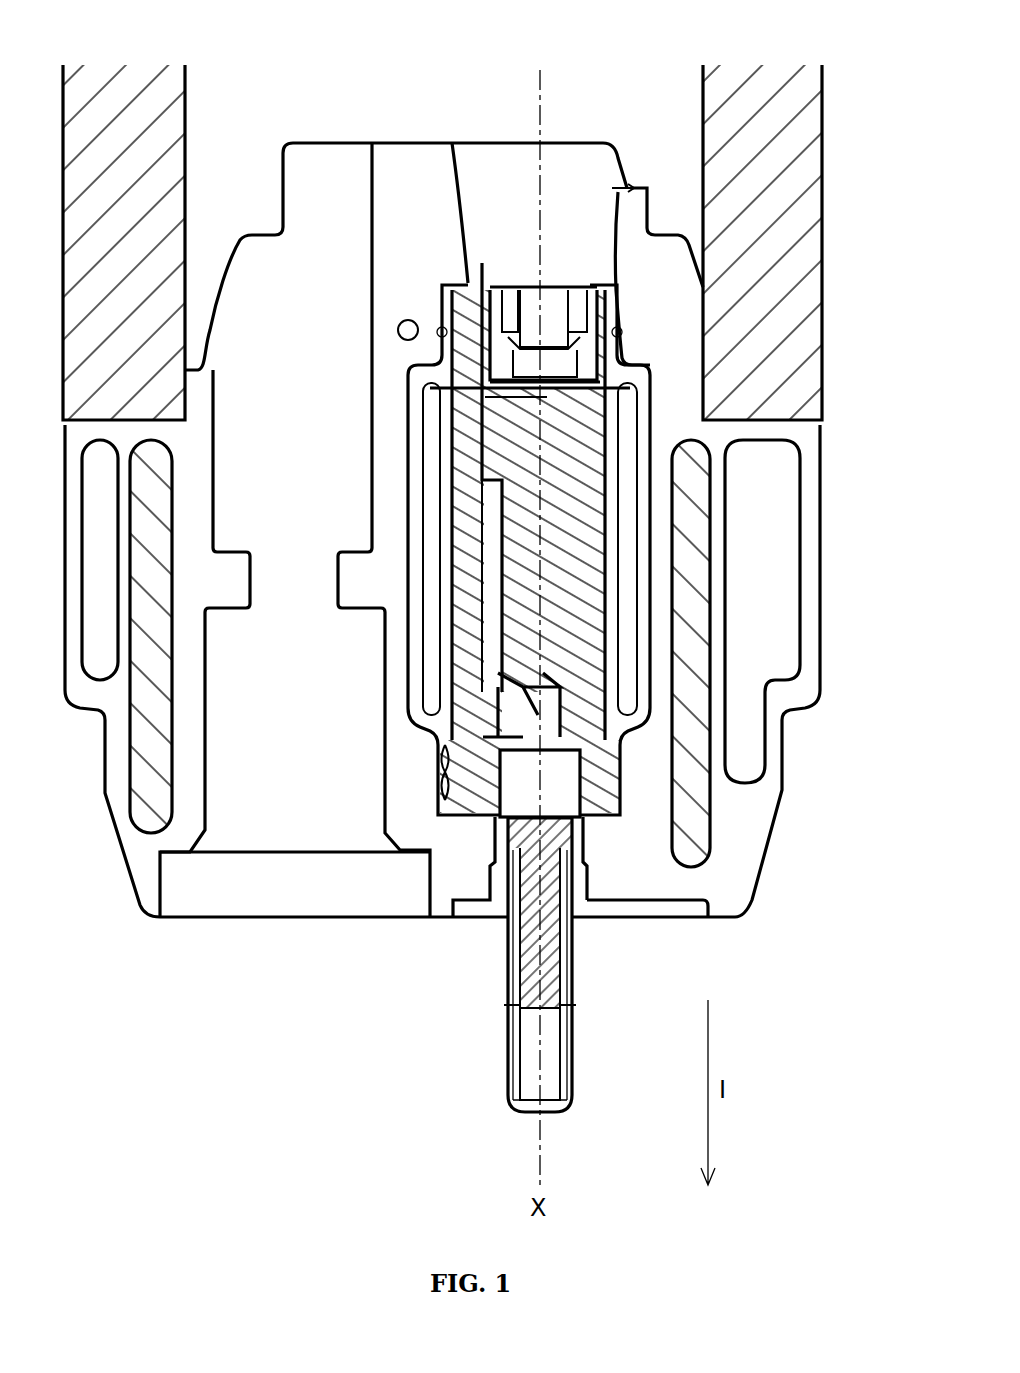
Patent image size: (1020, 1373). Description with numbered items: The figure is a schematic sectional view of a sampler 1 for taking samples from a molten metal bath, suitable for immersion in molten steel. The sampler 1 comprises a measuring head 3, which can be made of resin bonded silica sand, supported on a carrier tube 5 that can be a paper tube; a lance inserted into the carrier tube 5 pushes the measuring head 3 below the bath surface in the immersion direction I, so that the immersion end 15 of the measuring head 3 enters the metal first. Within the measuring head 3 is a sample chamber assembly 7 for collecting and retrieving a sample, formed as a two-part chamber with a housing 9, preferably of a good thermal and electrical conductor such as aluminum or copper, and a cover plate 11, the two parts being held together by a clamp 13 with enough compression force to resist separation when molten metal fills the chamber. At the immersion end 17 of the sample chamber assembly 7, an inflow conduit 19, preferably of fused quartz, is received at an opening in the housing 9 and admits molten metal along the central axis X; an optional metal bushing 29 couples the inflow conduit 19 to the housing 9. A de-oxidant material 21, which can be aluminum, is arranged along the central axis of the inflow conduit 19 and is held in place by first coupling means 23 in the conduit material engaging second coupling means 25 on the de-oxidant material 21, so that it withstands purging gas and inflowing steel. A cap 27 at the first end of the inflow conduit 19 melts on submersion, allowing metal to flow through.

The sampler 1 is at (593, 120).
The measuring head 3 is at (663, 378).
The carrier tube 5 is at (155, 245).
The sample chamber assembly 7 is at (583, 618).
The housing 9 is at (512, 462).
The cover plate 11 is at (472, 555).
The clamp 13 is at (478, 700).
The immersion end of the measuring head 15 is at (758, 890).
The immersion end of the sample chamber assembly 17 is at (468, 806).
The inflow conduit 19 is at (512, 997).
The de-oxidant material 21 is at (553, 950).
The first coupling means 23 is at (585, 848).
The second coupling means 25 is at (508, 840).
The cap 27 is at (505, 1073).
The metal bushing 29 is at (520, 780).